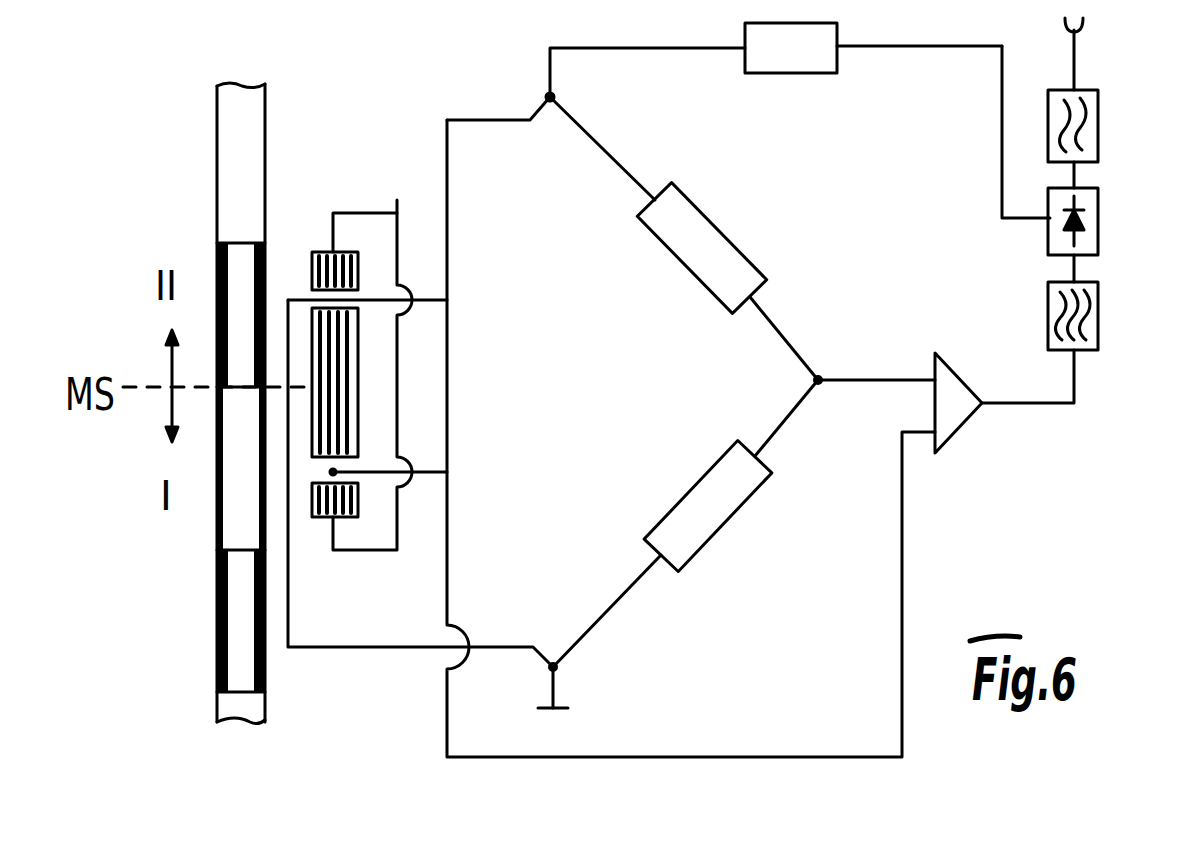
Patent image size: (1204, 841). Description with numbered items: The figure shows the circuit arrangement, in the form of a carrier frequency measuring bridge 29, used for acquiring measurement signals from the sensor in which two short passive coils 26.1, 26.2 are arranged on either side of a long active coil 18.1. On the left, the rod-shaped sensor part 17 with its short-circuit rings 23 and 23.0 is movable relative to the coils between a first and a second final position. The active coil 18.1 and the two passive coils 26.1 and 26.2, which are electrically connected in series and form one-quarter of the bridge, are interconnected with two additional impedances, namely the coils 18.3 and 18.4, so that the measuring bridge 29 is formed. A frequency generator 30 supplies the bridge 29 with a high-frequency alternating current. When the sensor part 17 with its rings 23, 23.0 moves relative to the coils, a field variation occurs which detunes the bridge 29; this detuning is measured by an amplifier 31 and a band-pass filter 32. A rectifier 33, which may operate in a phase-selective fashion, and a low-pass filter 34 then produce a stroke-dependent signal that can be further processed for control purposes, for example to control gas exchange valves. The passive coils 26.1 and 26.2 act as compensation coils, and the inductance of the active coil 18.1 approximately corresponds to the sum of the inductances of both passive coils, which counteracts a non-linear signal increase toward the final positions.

The rod-shaped sensor part 17 is at (255, 122).
The short-circuit ring 23 is at (215, 266).
The short-circuit ring 23.0 is at (215, 630).
The passive coil 26.1 is at (318, 252).
The passive coil 26.2 is at (323, 522).
The active coil 18.1 is at (360, 392).
The coil 18.3 is at (722, 252).
The coil 18.4 is at (735, 498).
The carrier frequency measuring bridge 29 is at (422, 700).
The frequency generator 30 is at (805, 66).
The amplifier 31 is at (950, 420).
The band-pass filter 32 is at (1098, 340).
The rectifier 33 is at (1098, 240).
The low-pass filter 34 is at (1098, 145).